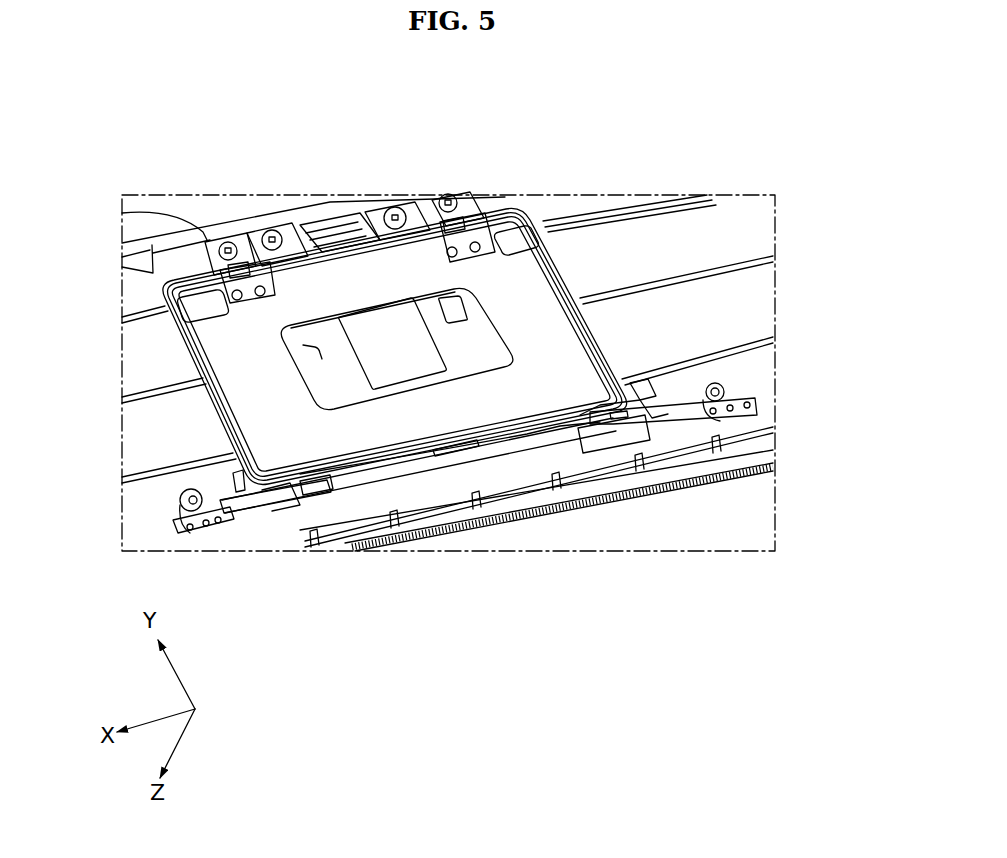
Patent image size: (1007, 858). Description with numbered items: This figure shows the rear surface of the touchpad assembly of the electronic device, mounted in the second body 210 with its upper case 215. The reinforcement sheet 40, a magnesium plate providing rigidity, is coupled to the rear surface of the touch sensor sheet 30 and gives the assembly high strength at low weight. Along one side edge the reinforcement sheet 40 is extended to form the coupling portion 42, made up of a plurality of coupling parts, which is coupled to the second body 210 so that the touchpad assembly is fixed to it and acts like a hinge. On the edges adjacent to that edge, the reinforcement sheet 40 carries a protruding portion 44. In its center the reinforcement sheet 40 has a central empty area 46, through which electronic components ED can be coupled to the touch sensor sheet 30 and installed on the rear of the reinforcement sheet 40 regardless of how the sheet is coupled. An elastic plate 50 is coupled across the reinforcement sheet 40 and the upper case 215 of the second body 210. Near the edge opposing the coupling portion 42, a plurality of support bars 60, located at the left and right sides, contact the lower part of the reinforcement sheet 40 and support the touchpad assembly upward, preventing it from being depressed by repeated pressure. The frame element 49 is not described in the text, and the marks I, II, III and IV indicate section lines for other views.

The touch sensor sheet 30 is at (428, 307).
The reinforcement sheet 40 is at (541, 293).
The coupling portion 42 is at (292, 230).
The protruding portion 44 is at (653, 390).
The central empty area 46 is at (313, 345).
The frame 49 is at (518, 233).
The elastic plate 50 is at (122, 213).
The support bar 60 is at (249, 517).
The second body 210 is at (675, 112).
The upper case 215 is at (642, 227).
The electronic components ED is at (410, 360).
The section line I- I is at (240, 506).
The section line II- II is at (200, 493).
The section line III- III is at (263, 237).
The section line IV- IV is at (220, 245).